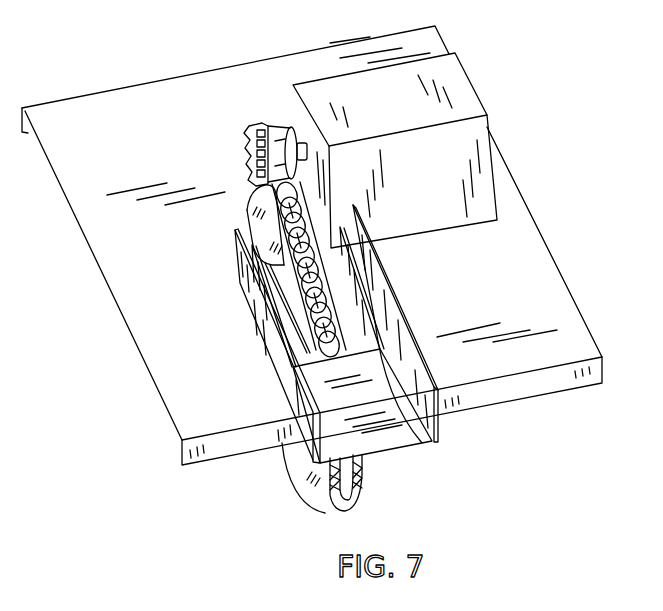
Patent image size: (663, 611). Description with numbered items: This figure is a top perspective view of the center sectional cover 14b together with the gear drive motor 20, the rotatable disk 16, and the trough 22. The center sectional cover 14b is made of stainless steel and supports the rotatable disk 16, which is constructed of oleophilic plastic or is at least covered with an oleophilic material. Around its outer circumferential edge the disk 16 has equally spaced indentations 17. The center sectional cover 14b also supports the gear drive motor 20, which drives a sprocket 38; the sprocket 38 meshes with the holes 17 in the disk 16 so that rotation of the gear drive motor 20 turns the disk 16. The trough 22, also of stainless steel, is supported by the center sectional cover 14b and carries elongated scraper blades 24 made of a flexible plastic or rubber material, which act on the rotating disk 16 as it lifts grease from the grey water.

The center sectional cover 14b is at (193, 304).
The rotatable disk 16 is at (267, 229).
The indentations 17 is at (308, 333).
The gear drive motor 20 is at (403, 110).
The trough 22 is at (371, 414).
The scraper blades 24 is at (430, 440).
The sprocket 38 is at (263, 122).